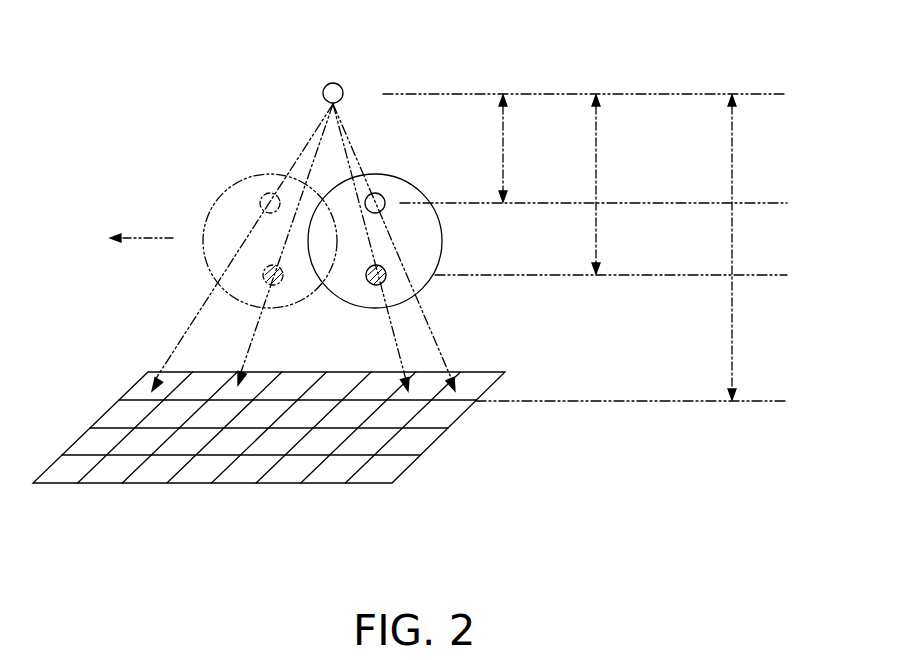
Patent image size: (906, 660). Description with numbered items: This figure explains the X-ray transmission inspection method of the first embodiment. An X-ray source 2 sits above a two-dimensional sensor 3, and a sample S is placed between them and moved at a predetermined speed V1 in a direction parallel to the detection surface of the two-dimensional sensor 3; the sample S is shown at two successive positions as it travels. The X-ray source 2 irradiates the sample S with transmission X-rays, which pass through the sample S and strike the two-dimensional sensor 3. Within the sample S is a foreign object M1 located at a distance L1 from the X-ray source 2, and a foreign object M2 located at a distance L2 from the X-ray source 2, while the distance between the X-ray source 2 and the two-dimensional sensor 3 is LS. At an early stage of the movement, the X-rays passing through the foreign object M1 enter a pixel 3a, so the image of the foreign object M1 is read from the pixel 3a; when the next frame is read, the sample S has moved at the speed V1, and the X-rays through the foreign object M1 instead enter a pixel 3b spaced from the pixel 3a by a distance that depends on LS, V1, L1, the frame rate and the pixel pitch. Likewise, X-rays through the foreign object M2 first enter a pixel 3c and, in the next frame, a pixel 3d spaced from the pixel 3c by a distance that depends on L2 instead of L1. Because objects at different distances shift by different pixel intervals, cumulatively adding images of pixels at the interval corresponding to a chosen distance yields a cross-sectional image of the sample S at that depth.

The X-ray source 2 is at (358, 62).
The two-dimensional sensor 3 is at (269, 472).
The pixel 3a is at (515, 359).
The pixel 3b is at (135, 344).
The pixel 3c is at (462, 342).
The pixel 3d is at (264, 357).
The sample S is at (318, 212).
The foreign object M1 is at (319, 157).
The foreign object M2 is at (309, 301).
The speed V1 is at (141, 220).
The distance L1 is at (537, 148).
The distance L2 is at (631, 184).
The distance LS is at (746, 247).